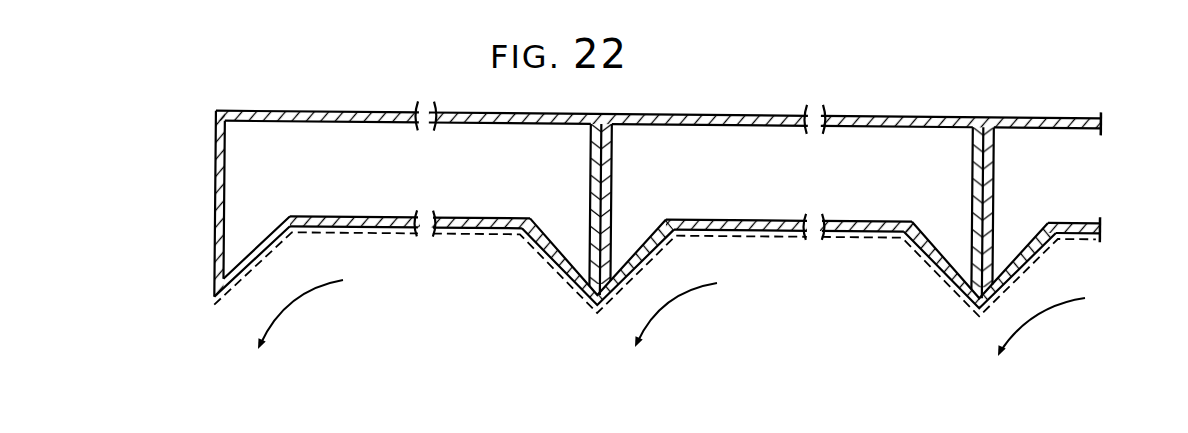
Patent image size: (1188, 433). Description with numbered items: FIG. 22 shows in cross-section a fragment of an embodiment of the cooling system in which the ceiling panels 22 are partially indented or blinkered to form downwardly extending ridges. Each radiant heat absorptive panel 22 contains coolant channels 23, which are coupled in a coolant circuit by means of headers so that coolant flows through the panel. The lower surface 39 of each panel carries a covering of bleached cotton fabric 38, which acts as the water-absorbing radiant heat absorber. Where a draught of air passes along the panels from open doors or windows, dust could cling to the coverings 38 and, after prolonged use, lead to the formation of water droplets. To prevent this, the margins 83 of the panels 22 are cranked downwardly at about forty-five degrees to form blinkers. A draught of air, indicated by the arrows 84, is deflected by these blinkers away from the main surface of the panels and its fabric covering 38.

The radiant heat absorptive panel 22 is at (215, 182).
The coolant channels 23 is at (325, 143).
The covering of bleached cotton fabric 38 is at (318, 233).
The panel surface 39 is at (390, 222).
The margins 83 is at (257, 260).
The arrows 84 is at (303, 300).